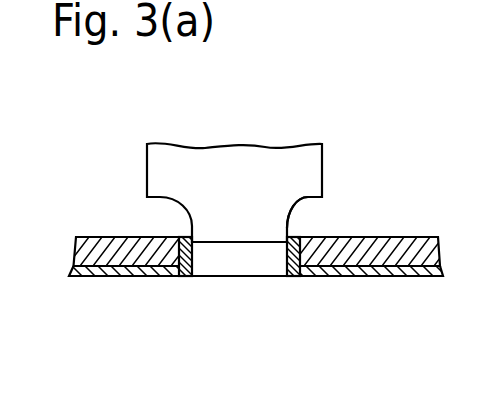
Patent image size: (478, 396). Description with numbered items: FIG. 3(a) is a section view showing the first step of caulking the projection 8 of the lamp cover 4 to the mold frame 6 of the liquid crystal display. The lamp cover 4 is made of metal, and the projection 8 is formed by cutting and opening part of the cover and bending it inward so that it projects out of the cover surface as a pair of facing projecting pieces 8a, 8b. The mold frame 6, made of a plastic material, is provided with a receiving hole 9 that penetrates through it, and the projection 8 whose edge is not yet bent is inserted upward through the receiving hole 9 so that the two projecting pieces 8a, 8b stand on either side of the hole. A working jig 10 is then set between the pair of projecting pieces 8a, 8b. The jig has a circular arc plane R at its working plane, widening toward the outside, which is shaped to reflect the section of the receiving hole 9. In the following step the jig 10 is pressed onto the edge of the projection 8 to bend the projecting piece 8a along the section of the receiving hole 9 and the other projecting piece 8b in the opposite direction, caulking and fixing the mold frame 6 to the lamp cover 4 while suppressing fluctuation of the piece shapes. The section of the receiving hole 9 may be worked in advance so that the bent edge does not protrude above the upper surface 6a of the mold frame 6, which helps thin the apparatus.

The working jig 10 is at (318, 160).
The circular arc plane R is at (306, 208).
The mold frame 6 is at (396, 248).
The upper surface of the mold frame 6a is at (124, 236).
The lamp cover 4 is at (393, 277).
The projection 8 is at (238, 307).
The projecting piece 8a is at (192, 258).
The projecting piece 8b is at (287, 262).
The receiving hole 9 is at (293, 268).